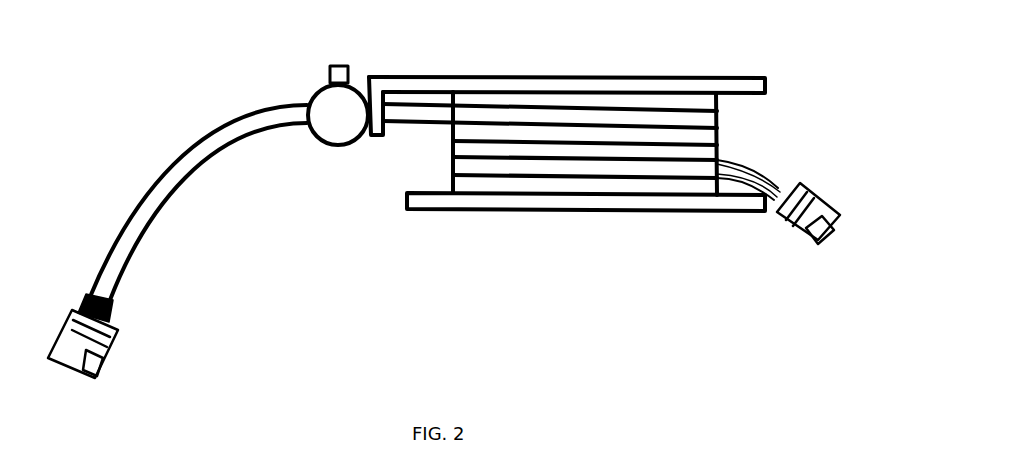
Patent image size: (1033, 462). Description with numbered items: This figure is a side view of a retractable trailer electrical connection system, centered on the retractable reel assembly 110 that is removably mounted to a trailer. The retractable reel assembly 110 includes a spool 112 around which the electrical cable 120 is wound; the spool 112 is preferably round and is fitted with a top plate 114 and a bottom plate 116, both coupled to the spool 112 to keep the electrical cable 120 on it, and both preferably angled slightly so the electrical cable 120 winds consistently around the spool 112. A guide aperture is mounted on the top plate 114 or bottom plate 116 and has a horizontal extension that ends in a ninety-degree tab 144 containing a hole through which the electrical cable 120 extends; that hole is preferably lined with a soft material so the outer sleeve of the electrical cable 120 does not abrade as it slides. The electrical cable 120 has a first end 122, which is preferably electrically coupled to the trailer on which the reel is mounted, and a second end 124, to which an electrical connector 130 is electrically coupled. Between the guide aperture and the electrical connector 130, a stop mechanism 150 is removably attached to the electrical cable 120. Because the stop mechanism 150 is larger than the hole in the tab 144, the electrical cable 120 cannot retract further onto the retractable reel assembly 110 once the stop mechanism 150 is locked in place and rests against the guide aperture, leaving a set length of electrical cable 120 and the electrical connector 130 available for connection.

The retractable reel assembly 110 is at (578, 39).
The spool 112 is at (721, 153).
The top plate 114 is at (767, 77).
The bottom plate 116 is at (625, 213).
The electrical cable 120 is at (215, 127).
The first end 122 is at (806, 234).
The second end 124 is at (87, 296).
The electrical connector 130 is at (109, 338).
The ninety-degree tab 144 is at (397, 78).
The stop mechanism 150 is at (336, 149).